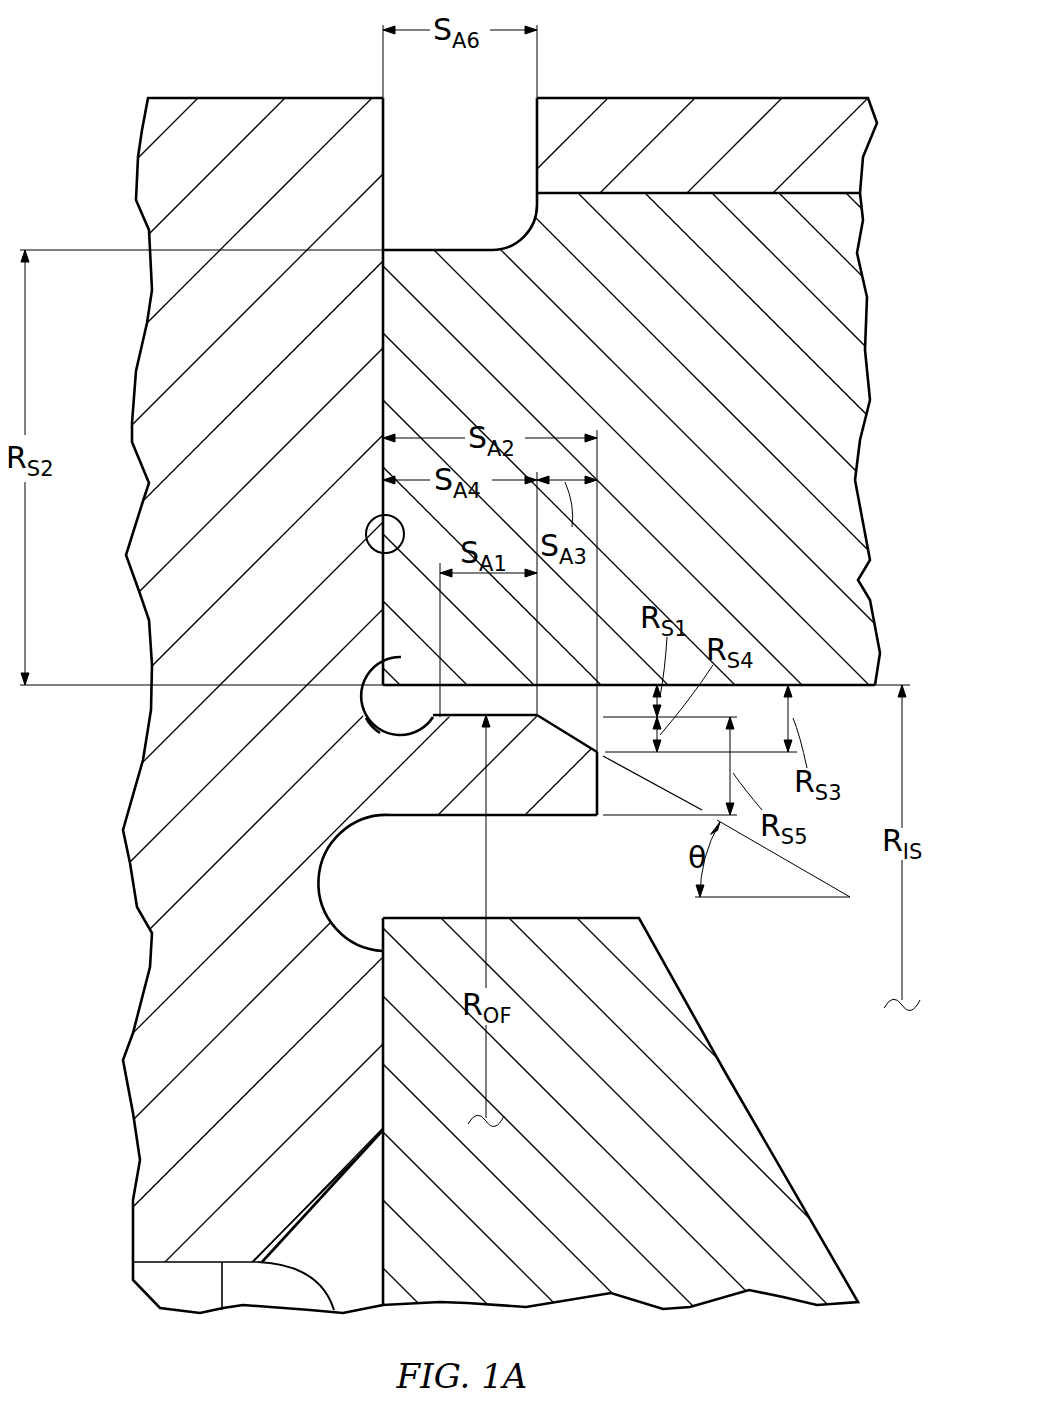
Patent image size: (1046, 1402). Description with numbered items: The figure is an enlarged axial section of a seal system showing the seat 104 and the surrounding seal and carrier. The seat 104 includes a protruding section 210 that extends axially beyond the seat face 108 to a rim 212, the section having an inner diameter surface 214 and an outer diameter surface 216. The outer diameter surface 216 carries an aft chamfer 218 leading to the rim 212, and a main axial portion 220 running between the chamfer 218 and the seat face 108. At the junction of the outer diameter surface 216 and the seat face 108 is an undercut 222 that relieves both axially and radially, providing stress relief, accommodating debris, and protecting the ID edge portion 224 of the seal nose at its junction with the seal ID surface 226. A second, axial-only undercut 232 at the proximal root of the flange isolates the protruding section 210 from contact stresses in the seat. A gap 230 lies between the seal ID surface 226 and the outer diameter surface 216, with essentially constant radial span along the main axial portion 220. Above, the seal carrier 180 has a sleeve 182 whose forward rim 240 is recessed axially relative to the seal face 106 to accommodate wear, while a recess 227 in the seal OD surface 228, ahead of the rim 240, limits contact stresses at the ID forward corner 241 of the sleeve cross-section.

The seat 104 is at (175, 484).
The seal face 106 is at (383, 357).
The seat face 108 is at (375, 545).
The seal carrier 180 is at (803, 112).
The sleeve 182 is at (718, 123).
The protruding section 210 is at (573, 790).
The rim 212 is at (600, 780).
The inner diameter surface 214 is at (513, 817).
The outer diameter surface 216 is at (527, 710).
The chamfer 218 is at (580, 742).
The main axial portion 220 is at (498, 710).
The undercut 222 is at (405, 700).
The ID edge portion 224 is at (362, 712).
The seal ID surface 226 is at (832, 690).
The recess 227 is at (405, 232).
The seal OD surface 228 is at (608, 193).
The gap 230 is at (478, 703).
The axial undercut 232 is at (342, 888).
The forward rim 240 is at (537, 133).
The ID forward corner 241 is at (537, 198).